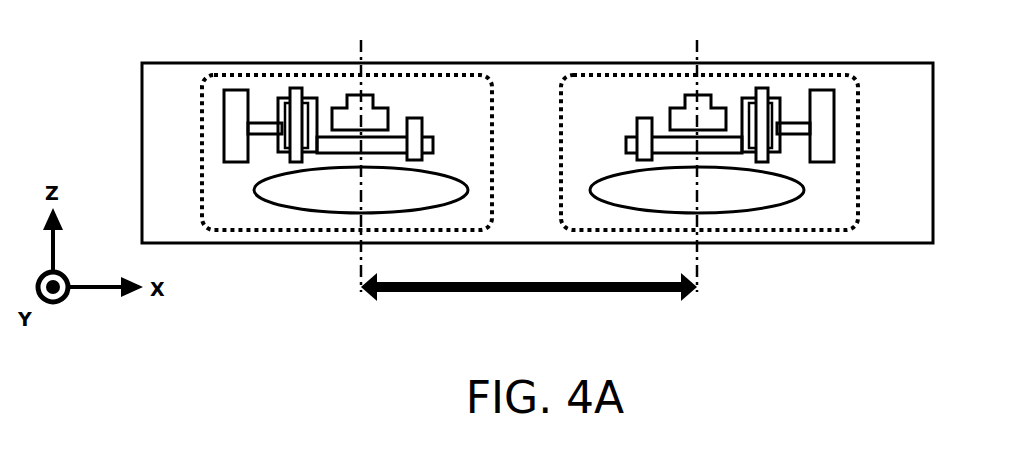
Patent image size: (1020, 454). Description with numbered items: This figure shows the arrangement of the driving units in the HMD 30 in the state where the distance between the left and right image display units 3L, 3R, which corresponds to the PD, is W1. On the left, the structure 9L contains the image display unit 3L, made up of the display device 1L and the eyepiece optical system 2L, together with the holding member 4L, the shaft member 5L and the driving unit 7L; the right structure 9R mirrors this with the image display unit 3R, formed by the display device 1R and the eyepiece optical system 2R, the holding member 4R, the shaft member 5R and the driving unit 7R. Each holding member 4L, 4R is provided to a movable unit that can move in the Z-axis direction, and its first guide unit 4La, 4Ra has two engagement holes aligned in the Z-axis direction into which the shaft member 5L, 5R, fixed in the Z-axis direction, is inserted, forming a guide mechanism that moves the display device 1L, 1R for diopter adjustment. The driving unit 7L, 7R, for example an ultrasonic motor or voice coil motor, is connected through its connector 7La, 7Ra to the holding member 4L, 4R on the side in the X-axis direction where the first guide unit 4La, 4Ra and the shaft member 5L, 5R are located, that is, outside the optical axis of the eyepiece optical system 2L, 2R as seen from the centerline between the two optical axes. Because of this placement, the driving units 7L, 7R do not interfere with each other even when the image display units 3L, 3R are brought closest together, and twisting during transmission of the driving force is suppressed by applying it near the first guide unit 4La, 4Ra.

The HMD 30 is at (172, 43).
The display device 1L is at (403, 137).
The display device 1R is at (655, 137).
The eyepiece optical system 2L is at (448, 175).
The eyepiece optical system 2R is at (612, 175).
The image display unit 3L is at (480, 92).
The image display unit 3R is at (578, 92).
The holding member 4L is at (431, 134).
The holding member 4R is at (697, 190).
The first guide unit 4La is at (276, 137).
The first guide unit 4Ra is at (781, 137).
The shaft member 5L is at (297, 88).
The shaft member 5R is at (761, 88).
The driving unit 7L is at (224, 112).
The driving unit 7R is at (834, 112).
The connector 7La is at (263, 122).
The connector 7Ra is at (795, 122).
The structure 9L is at (201, 178).
The structure 9R is at (859, 177).
The distance between the image display units W1 is at (529, 278).